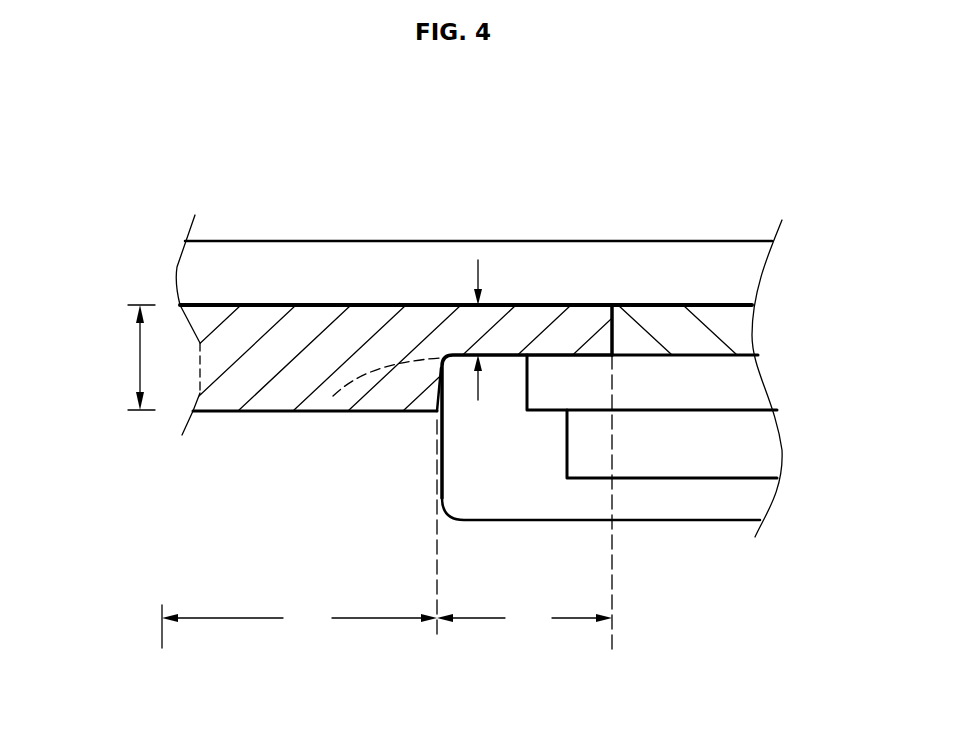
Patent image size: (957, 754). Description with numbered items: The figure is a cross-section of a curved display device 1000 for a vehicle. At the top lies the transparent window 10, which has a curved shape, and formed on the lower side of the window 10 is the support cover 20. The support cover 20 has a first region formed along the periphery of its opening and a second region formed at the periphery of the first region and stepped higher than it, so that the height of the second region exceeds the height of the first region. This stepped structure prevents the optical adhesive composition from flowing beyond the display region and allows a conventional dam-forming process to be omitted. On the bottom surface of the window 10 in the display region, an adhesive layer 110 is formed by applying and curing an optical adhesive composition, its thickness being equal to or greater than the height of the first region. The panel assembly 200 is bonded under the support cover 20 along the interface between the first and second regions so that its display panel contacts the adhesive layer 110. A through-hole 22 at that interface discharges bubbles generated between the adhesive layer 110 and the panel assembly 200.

The curved display device 1000 is at (128, 107).
The transparent window 10 is at (340, 268).
The support cover 20 is at (262, 377).
The through-hole 22 is at (370, 412).
The adhesive layer 110 is at (732, 332).
The panel assembly 200 is at (723, 388).